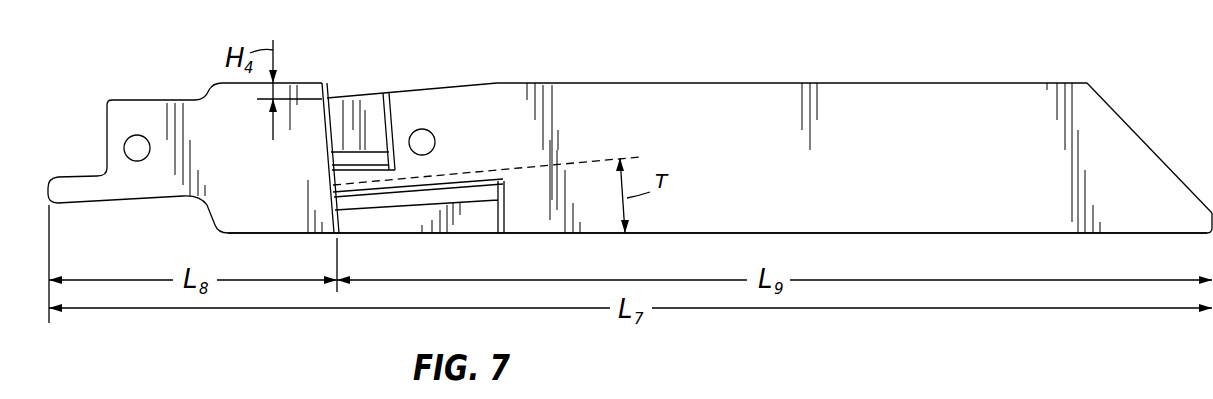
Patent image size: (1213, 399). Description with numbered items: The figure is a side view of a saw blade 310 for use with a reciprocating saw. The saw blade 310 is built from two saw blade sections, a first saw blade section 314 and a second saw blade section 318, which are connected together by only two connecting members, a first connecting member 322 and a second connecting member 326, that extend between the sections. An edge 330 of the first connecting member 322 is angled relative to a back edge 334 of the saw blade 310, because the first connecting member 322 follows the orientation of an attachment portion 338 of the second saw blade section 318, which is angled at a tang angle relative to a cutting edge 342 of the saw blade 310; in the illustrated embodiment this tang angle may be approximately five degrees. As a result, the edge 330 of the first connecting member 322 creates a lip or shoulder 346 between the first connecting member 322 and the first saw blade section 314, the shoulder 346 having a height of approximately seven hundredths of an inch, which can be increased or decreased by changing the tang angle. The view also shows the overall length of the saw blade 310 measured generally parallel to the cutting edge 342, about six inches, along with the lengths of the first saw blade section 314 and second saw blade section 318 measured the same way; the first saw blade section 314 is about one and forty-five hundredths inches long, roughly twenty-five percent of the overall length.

The saw blade 310 is at (864, 45).
The first saw blade section 314 is at (142, 108).
The second saw blade section 318 is at (975, 102).
The first connecting member 322 is at (370, 103).
The second connecting member 326 is at (467, 223).
The edge of the first connecting member 330 is at (352, 98).
The back edge 334 is at (637, 83).
The attachment portion 338 is at (457, 92).
The cutting edge 342 is at (930, 235).
The shoulder 346 is at (323, 90).